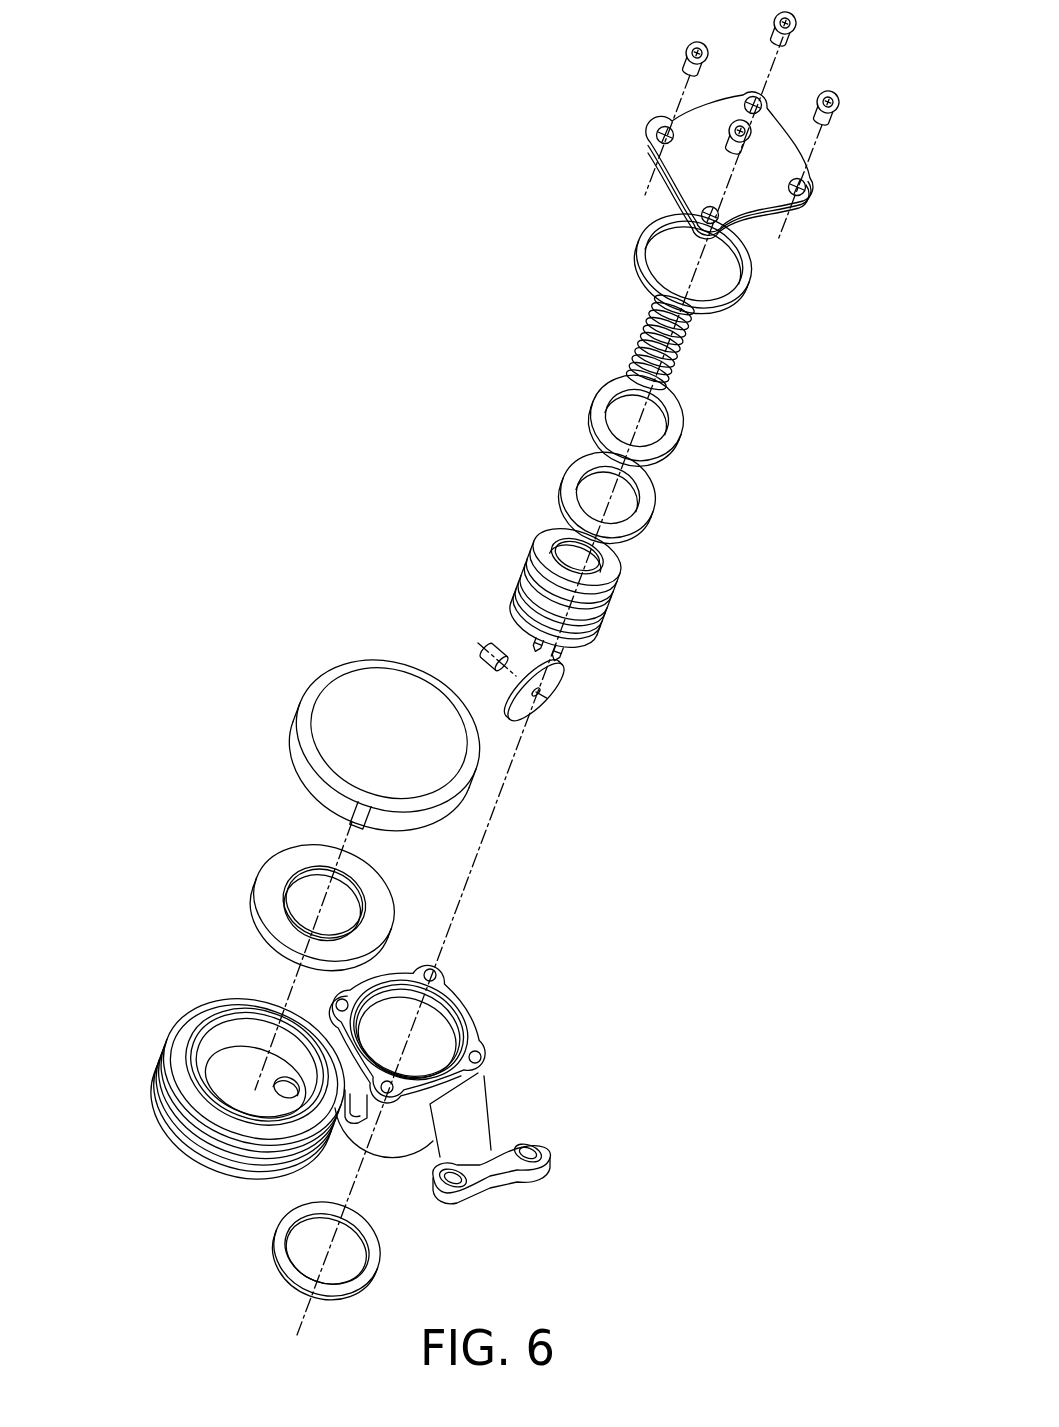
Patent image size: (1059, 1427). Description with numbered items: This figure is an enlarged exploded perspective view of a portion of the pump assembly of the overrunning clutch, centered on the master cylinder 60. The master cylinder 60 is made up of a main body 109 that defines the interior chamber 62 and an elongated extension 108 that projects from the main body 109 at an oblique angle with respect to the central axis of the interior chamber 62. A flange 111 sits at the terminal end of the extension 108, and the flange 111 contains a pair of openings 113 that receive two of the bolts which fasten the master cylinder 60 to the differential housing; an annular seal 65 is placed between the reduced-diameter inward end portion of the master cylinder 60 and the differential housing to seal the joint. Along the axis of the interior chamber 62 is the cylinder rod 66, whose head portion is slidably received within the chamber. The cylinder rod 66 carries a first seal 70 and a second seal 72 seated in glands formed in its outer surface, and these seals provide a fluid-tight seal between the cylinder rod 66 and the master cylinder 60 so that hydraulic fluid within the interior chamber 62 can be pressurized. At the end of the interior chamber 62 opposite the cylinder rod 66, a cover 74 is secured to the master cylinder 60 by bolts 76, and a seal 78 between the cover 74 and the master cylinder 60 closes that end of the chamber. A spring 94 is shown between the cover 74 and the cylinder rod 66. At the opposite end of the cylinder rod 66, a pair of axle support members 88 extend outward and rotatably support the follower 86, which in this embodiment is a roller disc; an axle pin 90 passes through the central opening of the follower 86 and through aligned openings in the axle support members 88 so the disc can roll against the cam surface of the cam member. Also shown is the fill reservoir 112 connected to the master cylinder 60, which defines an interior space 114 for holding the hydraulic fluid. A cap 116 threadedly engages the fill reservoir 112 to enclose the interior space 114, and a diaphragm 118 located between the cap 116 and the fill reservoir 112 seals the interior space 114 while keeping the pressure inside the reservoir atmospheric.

The master cylinder 60 is at (457, 992).
The interior chamber 62 is at (433, 1027).
The annular seal 65 is at (278, 1240).
The cylinder rod 66 is at (540, 565).
The first seal 70 is at (677, 422).
The second seal 72 is at (645, 507).
The cover 74 is at (682, 170).
The bolts 76 is at (687, 55).
The seal 78 is at (748, 277).
The follower 86 is at (563, 687).
The axle support members 88 is at (535, 640).
The axle pin 90 is at (480, 662).
The spring 94 is at (645, 338).
The elongated extension 108 is at (473, 1113).
The main body 109 is at (410, 1137).
The flange 111 is at (507, 1182).
The fill reservoir 112 is at (162, 1110).
The openings 113 is at (530, 1153).
The interior space 114 is at (230, 1043).
The cap 116 is at (326, 714).
The diaphragm 118 is at (274, 876).